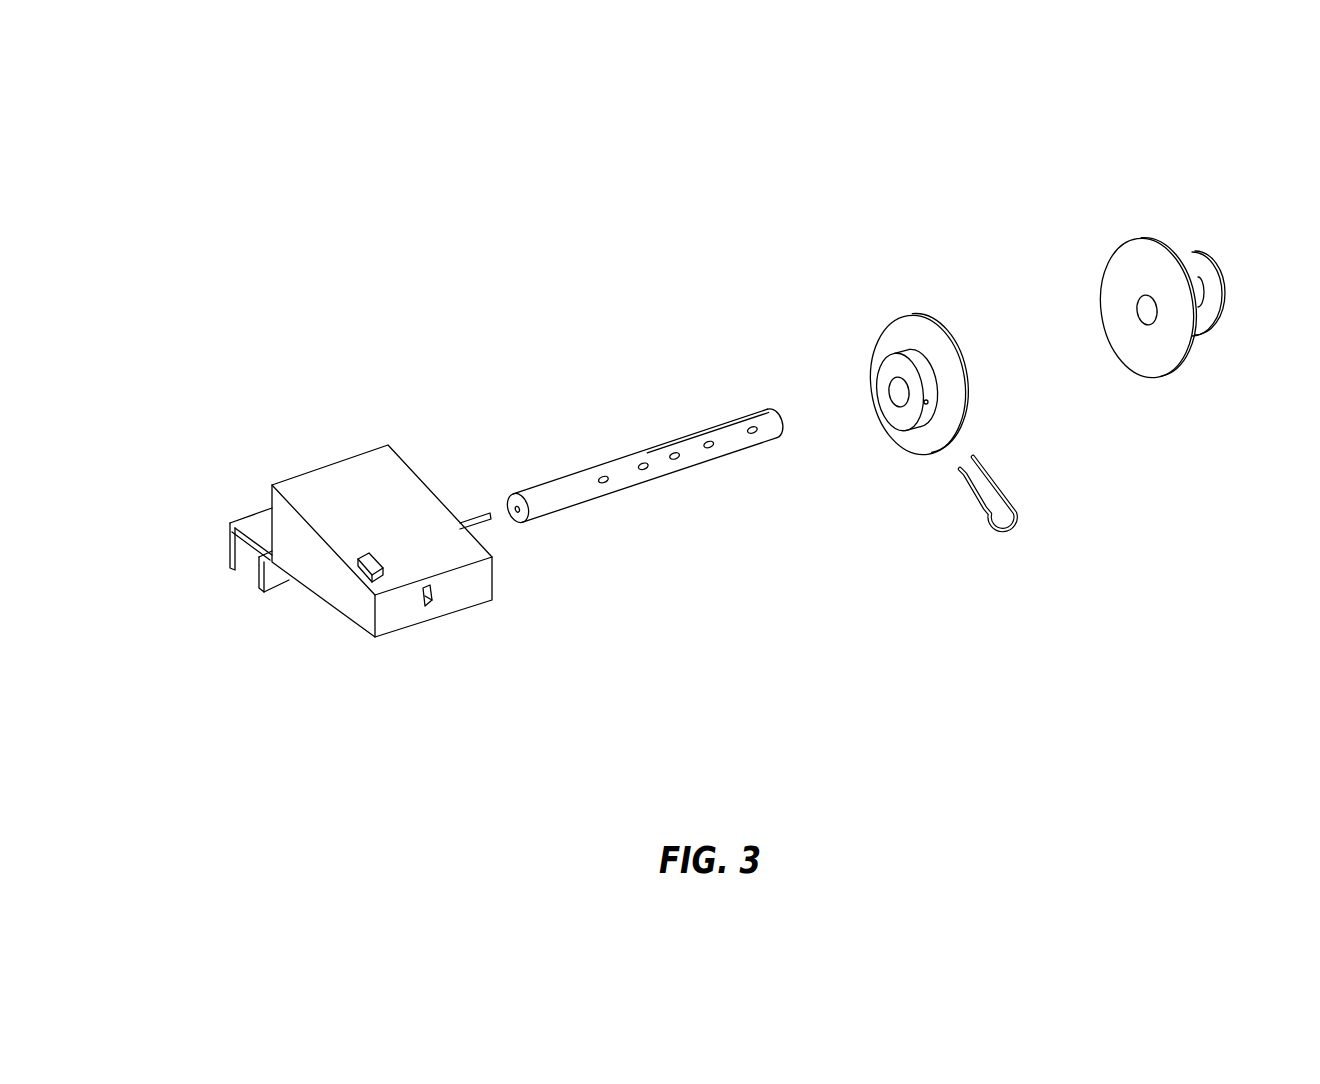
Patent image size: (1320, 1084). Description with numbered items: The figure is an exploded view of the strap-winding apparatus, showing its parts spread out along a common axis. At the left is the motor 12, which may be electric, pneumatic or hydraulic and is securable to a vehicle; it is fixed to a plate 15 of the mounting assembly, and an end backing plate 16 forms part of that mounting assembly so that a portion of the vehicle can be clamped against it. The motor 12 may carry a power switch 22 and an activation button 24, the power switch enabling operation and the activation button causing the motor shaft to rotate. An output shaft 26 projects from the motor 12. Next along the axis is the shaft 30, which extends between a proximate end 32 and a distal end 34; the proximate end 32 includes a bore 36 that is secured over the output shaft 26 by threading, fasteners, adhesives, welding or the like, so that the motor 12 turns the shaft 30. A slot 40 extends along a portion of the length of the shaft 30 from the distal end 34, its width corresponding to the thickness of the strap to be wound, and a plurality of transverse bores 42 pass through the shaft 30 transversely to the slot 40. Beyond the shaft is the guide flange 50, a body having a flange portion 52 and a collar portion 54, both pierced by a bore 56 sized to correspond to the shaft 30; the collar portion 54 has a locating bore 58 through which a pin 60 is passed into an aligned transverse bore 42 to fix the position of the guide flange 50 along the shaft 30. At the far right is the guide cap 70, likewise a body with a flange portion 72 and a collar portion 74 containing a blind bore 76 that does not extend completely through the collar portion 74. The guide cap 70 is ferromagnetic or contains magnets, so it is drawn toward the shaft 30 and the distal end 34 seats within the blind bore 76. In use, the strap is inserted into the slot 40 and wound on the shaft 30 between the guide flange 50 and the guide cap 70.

The motor 12 is at (350, 457).
The plate 15 is at (252, 526).
The end backing plate 16 is at (230, 550).
The power switch 22 is at (360, 566).
The activation button 24 is at (437, 603).
The output shaft 26 is at (470, 515).
The shaft 30 is at (645, 480).
The proximate end 32 is at (515, 493).
The distal end 34 is at (773, 408).
The bore 36 is at (515, 517).
The slot 40 is at (672, 443).
The transverse bores 42 is at (752, 433).
The guide flange 50 is at (922, 315).
The flange portion 52 is at (948, 323).
The collar portion 54 is at (885, 367).
The bore 56 is at (898, 402).
The locating bore 58 is at (928, 402).
The pin 60 is at (1012, 495).
The guide cap 70 is at (1153, 238).
The flange portion 72 is at (1155, 357).
The collar portion 74 is at (1192, 258).
The blind bore 76 is at (1150, 307).